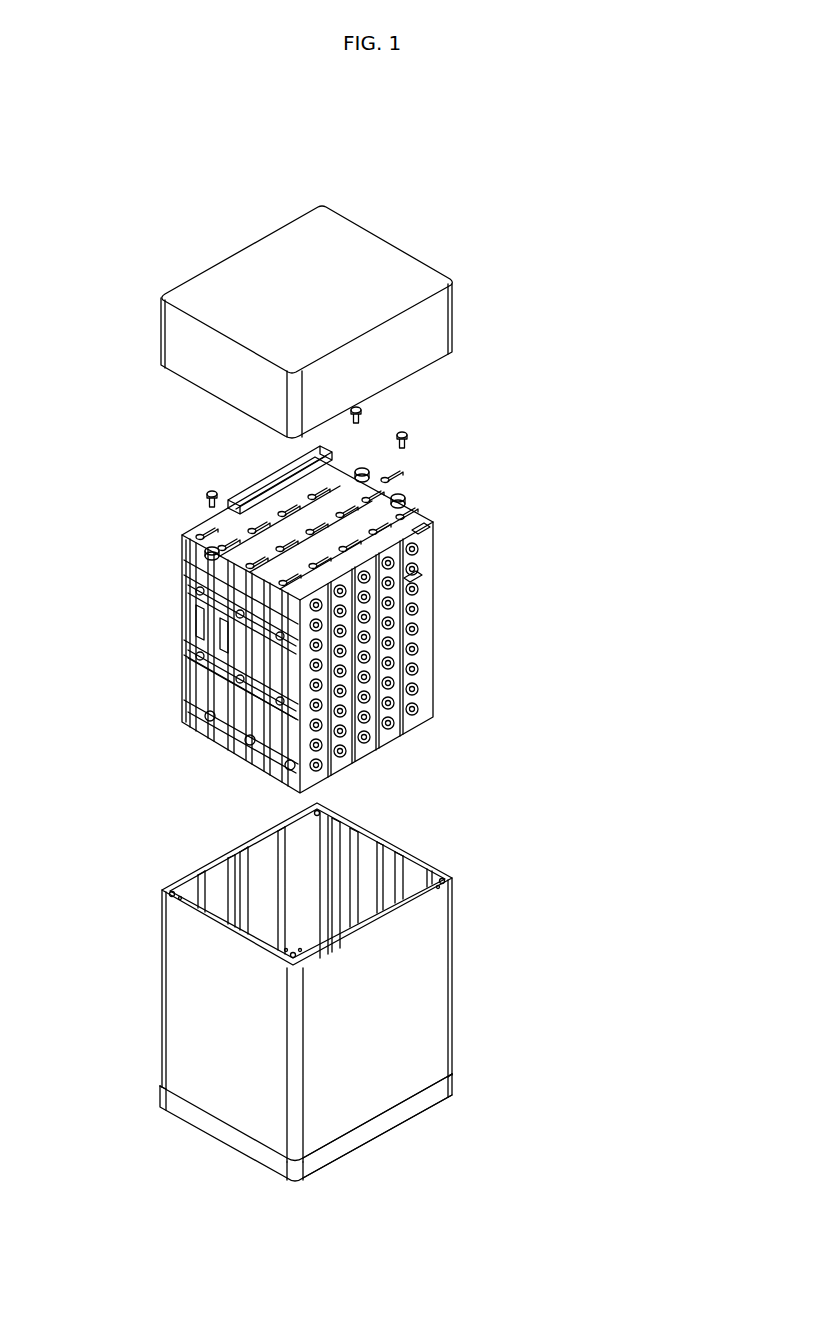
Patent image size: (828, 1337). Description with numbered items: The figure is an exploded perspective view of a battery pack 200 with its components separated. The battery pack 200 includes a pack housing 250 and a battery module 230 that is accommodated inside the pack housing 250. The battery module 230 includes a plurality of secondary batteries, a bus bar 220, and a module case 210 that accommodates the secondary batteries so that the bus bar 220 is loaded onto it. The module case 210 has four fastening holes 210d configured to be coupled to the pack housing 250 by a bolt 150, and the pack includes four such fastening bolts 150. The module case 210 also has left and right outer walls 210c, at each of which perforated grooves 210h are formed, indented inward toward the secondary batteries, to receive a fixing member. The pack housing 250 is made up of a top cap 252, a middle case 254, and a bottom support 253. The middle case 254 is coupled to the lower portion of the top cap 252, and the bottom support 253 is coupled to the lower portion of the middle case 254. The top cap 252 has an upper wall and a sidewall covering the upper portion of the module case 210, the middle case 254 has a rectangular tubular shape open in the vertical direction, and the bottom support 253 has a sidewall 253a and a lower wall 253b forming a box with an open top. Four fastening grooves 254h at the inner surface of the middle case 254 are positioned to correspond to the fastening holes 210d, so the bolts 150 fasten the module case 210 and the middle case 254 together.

The battery pack 200 is at (195, 173).
The top cap 252 is at (146, 323).
The bottom support 253 is at (146, 1092).
The middle case 254 is at (146, 970).
The pack housing 250 is at (190, 1033).
The bolt 150 is at (206, 491).
The module case 210 is at (185, 713).
The outer wall 210c is at (200, 612).
The fastening hole 210d is at (196, 576).
The perforated groove 210h is at (420, 540).
The bus bar 220 is at (385, 662).
The battery module 230 is at (170, 663).
The fastening groove 254h is at (401, 873).
The sidewall 253a is at (390, 1115).
The lower wall 253b is at (357, 1147).